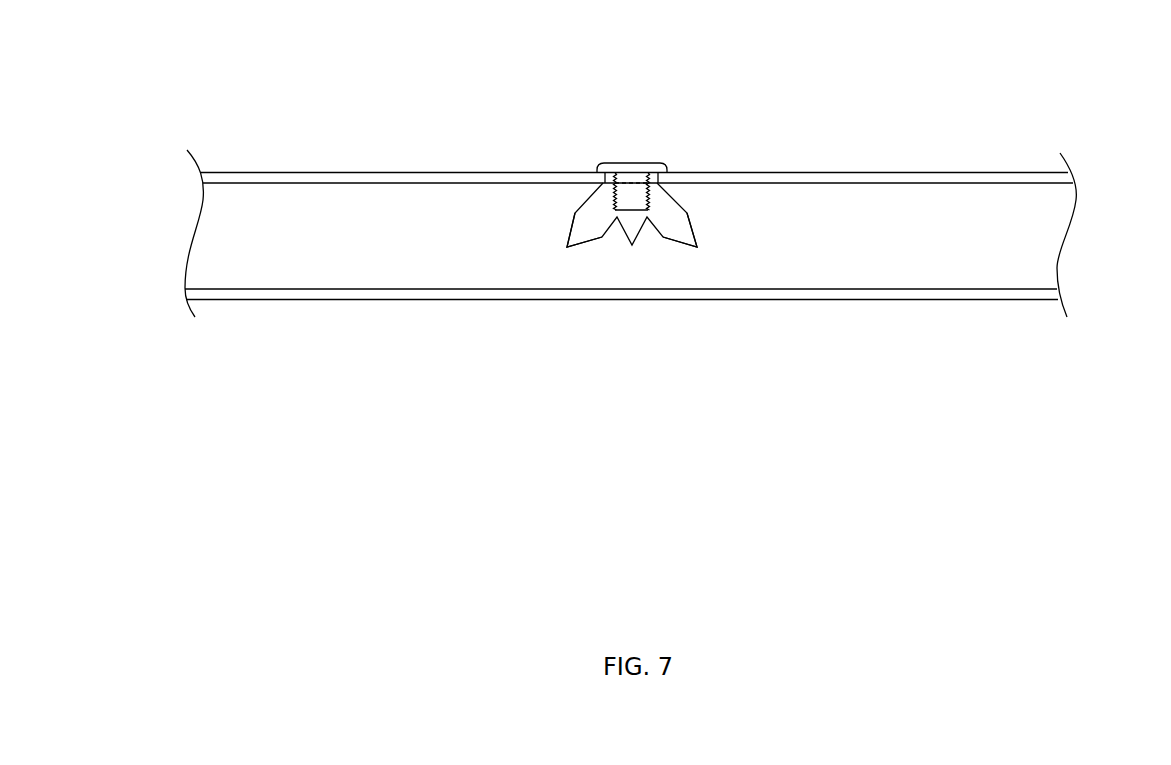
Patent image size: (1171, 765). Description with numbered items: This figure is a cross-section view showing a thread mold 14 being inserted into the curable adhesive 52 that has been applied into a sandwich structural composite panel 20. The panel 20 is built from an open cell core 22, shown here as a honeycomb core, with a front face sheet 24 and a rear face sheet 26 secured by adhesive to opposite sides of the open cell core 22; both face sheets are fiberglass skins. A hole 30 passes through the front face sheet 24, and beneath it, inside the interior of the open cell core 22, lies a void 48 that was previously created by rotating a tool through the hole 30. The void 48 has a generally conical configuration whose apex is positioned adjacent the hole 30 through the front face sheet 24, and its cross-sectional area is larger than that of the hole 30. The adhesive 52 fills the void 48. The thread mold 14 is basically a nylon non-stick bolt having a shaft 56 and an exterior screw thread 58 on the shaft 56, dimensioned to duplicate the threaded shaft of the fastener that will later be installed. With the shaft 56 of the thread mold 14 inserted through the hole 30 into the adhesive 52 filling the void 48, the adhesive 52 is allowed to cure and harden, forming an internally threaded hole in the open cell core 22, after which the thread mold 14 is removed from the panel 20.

The thread mold 14 is at (610, 179).
The sandwich structural composite panel 20 is at (676, 219).
The open cell core 22 is at (1028, 238).
The front face sheet 24 is at (257, 172).
The rear face sheet 26 is at (256, 296).
The hole 30 is at (633, 173).
The void 48 is at (610, 237).
The adhesive 52 is at (588, 227).
The shaft 56 is at (640, 205).
The exterior screw thread 58 is at (648, 200).